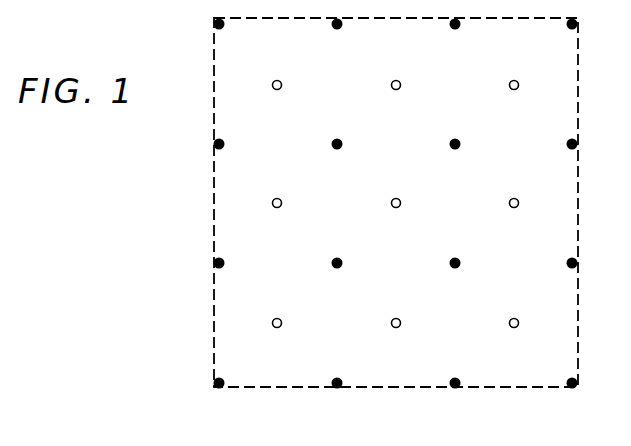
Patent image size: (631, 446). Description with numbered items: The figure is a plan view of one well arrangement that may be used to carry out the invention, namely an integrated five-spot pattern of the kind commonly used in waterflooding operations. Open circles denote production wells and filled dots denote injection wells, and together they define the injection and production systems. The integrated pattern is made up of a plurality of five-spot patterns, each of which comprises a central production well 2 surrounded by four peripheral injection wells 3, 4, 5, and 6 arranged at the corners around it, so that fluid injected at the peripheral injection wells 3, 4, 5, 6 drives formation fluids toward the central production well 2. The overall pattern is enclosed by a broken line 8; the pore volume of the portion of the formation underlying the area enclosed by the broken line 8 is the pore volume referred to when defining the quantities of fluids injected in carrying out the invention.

The central production well 2 is at (403, 193).
The peripheral injection well 3 is at (343, 133).
The peripheral injection well 4 is at (461, 133).
The peripheral injection well 5 is at (461, 253).
The peripheral injection well 6 is at (343, 253).
The broken line 8 is at (214, 52).